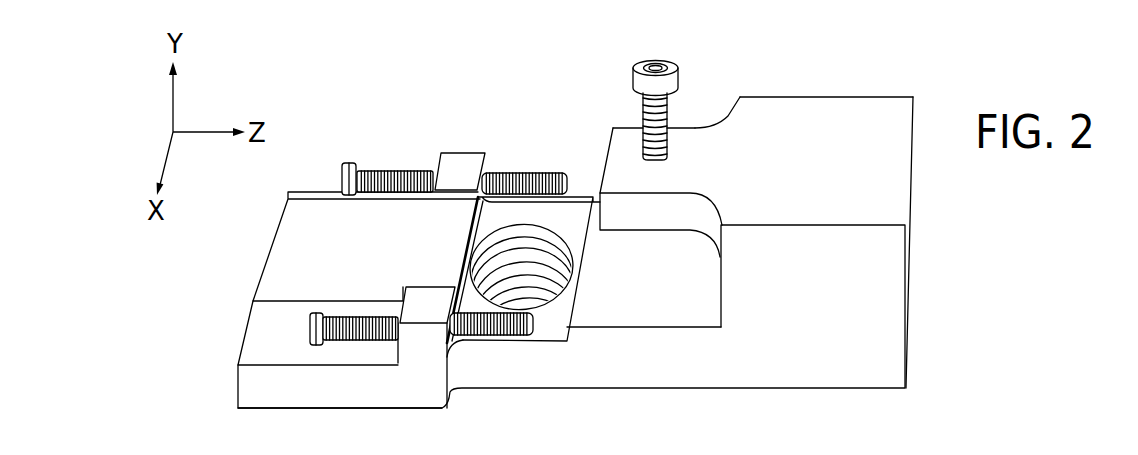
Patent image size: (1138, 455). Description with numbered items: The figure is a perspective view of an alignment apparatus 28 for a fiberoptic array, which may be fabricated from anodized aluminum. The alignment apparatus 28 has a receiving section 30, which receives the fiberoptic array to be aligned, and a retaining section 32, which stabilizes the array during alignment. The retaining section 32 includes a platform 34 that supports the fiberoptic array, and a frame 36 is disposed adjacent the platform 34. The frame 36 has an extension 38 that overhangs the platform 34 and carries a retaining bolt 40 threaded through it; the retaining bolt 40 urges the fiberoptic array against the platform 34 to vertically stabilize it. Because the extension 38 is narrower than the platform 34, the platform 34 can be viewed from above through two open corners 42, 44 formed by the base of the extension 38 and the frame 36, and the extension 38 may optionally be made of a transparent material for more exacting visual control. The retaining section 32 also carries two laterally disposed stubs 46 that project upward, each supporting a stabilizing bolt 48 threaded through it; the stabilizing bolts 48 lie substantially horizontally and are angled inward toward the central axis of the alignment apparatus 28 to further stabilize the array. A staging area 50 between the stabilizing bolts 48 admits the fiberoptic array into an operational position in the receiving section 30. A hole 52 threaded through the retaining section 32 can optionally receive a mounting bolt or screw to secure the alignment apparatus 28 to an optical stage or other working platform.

The alignment apparatus 28 is at (781, 74).
The receiving section 30 is at (724, 372).
The retaining section 32 is at (222, 413).
The platform 34 is at (632, 319).
The frame 36 is at (862, 108).
The extension 38 is at (697, 137).
The retaining bolt 40 is at (642, 108).
The open corner 42 is at (733, 122).
The open corner 44 is at (721, 205).
The stubs 46 is at (465, 165).
The stabilizing bolts 48 is at (347, 164).
The staging area 50 is at (278, 247).
The hole 52 is at (573, 285).